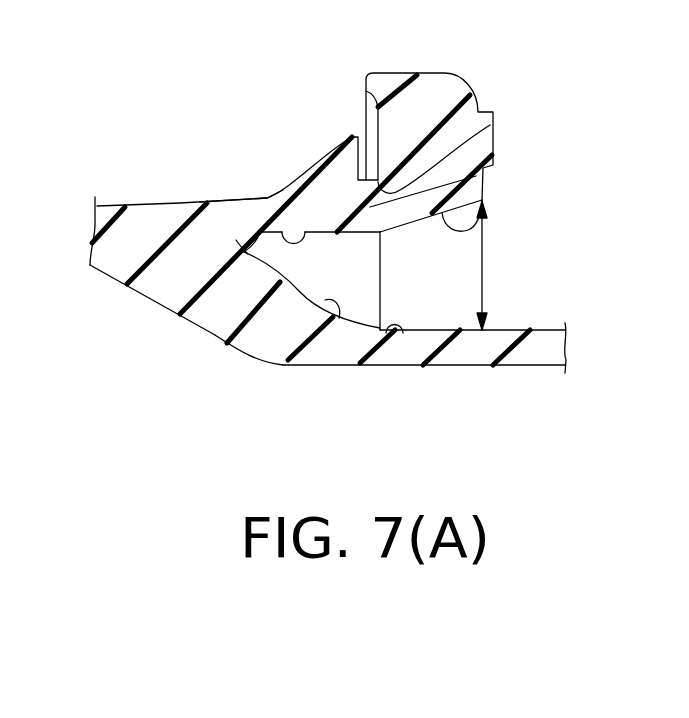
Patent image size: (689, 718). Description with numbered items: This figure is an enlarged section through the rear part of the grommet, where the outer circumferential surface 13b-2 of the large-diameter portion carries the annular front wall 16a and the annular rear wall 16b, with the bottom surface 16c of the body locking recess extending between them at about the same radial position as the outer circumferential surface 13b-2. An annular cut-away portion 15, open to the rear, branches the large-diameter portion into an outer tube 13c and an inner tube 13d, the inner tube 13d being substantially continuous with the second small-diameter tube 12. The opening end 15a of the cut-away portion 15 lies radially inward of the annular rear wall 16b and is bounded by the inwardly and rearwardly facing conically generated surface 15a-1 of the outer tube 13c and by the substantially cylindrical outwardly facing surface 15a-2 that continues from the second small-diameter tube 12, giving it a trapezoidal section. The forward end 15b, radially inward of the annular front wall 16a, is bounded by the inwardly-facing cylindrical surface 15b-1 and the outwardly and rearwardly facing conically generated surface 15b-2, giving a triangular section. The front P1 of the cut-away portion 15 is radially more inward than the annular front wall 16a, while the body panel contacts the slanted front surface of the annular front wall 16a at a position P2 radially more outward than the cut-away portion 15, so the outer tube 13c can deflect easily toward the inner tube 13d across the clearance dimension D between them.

The second small-diameter tube 12 is at (518, 360).
The outer circumferential surface 13b-2 is at (110, 207).
The outer tube 13c is at (480, 180).
The inner tube 13d is at (448, 352).
The cut-away portion 15 is at (482, 257).
The opening end 15a is at (453, 313).
The conically generated surface 15a-1 is at (485, 228).
The cylindrical outwardly facing surface 15a-2 is at (403, 338).
The forward end 15b is at (290, 275).
The inwardly-facing cylindrical surface 15b-1 is at (255, 197).
The outwardly and rearwardly facing conically generated surface 15b-2 is at (339, 318).
The annular front wall 16a is at (316, 148).
The annular rear wall 16b is at (427, 83).
The bottom surface 16c is at (493, 128).
The front of the cut-away portion P1 is at (235, 254).
The contact position P2 is at (277, 187).
The dimension D is at (482, 279).